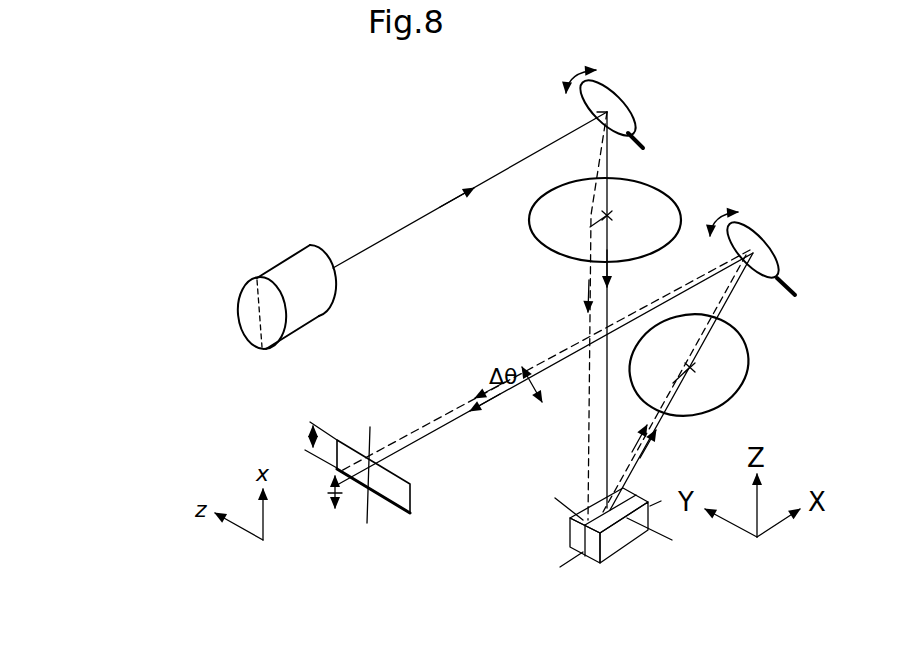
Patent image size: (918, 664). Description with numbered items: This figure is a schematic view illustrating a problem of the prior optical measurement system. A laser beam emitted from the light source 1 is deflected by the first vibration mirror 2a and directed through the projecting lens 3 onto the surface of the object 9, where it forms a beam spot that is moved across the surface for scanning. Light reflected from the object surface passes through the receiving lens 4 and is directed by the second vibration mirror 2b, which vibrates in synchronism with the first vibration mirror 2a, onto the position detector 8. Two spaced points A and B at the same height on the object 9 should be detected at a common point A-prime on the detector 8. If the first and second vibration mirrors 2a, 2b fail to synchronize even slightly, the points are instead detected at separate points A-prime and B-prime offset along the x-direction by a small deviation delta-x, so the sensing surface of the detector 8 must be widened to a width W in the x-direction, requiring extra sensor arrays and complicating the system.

The light source 1 is at (308, 260).
The first vibration mirror 2a is at (611, 93).
The second vibration mirror 2b is at (769, 249).
The projecting lens 3 is at (667, 197).
The receiving lens 4 is at (745, 383).
The position detector 8 is at (402, 513).
The object 9 is at (618, 540).